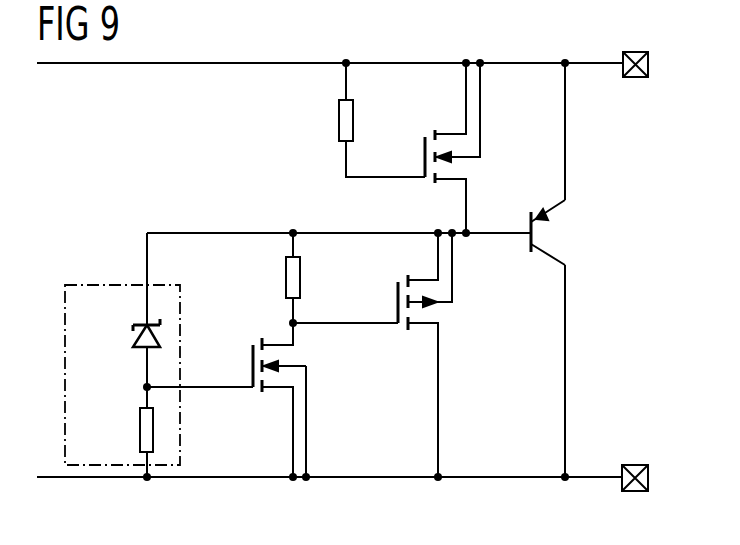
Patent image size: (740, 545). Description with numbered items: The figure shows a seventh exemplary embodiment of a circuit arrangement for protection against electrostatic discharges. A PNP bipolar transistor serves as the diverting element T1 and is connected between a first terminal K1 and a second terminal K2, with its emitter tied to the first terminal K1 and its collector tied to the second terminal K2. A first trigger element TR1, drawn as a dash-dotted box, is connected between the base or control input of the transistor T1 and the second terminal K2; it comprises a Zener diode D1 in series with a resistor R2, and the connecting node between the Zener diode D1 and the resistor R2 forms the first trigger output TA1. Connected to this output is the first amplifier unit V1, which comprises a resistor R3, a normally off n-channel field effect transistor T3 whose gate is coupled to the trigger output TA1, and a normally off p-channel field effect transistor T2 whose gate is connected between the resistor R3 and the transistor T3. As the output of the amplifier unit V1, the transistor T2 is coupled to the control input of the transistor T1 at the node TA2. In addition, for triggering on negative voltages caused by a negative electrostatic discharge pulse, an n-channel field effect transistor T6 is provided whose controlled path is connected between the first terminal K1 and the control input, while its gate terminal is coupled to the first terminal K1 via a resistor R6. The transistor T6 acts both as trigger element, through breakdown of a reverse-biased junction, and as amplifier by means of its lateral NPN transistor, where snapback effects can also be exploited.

The first terminal K1 is at (638, 78).
The second terminal K2 is at (634, 463).
The resistor R6 is at (339, 117).
The n-channel field effect transistor T6 is at (425, 157).
The diverting element T1 is at (540, 232).
The second connection node TA2 is at (339, 217).
The first trigger element TR1 is at (85, 282).
The Zener diode D1 is at (135, 330).
The resistor R2 is at (140, 430).
The first trigger output TA1 is at (183, 388).
The normally off n-channel field effect transistor T3 is at (253, 367).
The resistor R3 is at (286, 282).
The normally off p-channel field effect transistor T2 is at (398, 302).
The first amplifier unit V1 is at (468, 327).